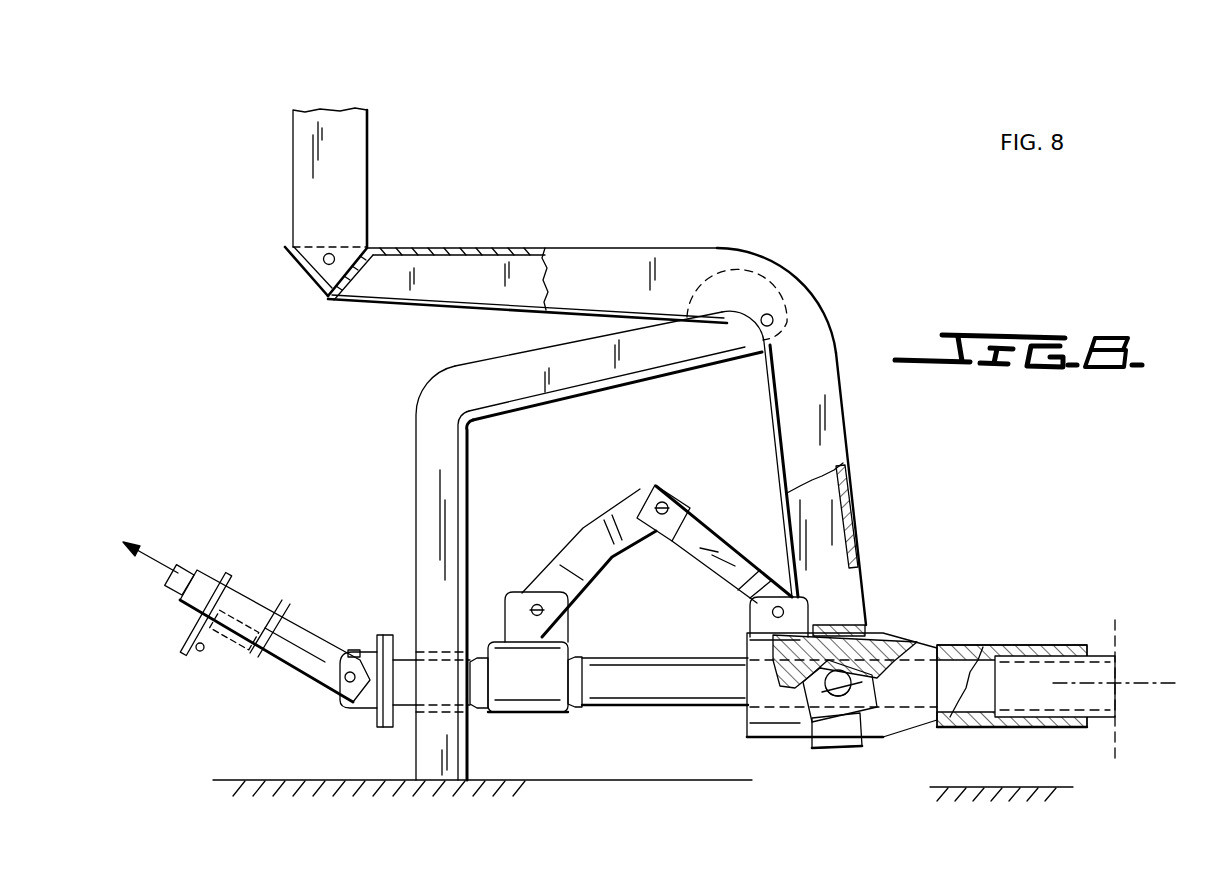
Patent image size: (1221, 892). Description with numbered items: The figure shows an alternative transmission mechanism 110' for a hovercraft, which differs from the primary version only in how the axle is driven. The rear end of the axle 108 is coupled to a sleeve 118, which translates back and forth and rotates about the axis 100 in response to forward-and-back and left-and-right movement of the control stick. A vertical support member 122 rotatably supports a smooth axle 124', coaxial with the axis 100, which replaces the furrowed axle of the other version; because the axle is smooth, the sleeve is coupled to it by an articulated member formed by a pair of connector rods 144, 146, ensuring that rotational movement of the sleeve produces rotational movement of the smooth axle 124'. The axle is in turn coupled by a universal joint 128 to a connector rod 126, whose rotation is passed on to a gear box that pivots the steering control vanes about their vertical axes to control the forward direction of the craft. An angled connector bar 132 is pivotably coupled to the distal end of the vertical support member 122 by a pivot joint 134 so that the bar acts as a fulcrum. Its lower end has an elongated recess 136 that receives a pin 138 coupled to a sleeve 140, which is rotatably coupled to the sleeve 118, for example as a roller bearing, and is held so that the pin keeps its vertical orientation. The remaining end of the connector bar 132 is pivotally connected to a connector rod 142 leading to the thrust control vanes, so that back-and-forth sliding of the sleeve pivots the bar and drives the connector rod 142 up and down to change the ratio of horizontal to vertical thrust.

The transmission mechanism 110' is at (587, 285).
The connector rod 142 is at (372, 172).
The pivot joint 134 is at (774, 318).
The angled connector bar 132 is at (827, 418).
The vertical support member 122 is at (418, 497).
The connector rod 144 is at (600, 545).
The connector rod 146 is at (720, 548).
The pin 138 is at (840, 677).
The elongated recess 136 is at (860, 697).
The sleeve 140 is at (828, 747).
The sleeve 118 is at (782, 730).
The axle 108 is at (1102, 673).
The axis 100 is at (1143, 683).
The smooth axle 124' is at (562, 689).
The connector rod 126 is at (307, 630).
The universal joint 128 is at (344, 708).